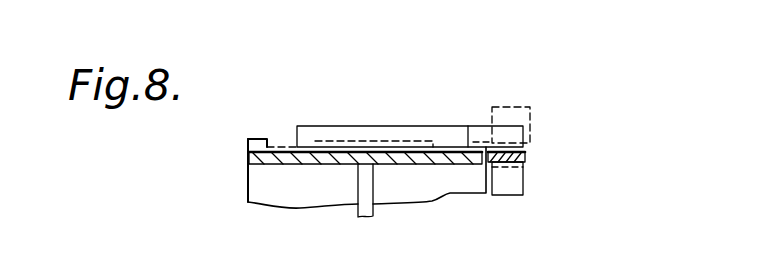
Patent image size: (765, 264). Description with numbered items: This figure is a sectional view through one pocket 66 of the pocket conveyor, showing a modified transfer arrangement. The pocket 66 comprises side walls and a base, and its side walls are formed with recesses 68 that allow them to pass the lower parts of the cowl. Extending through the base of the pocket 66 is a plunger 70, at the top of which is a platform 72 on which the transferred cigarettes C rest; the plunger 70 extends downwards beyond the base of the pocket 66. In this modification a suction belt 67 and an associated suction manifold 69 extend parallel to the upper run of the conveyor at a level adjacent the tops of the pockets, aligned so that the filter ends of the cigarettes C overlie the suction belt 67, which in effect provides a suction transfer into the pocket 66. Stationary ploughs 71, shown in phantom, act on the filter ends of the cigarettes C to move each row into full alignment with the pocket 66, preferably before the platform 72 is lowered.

The pocket 66 is at (242, 136).
The suction belt 67 is at (525, 157).
The recesses 68 is at (272, 141).
The suction manifold 69 is at (523, 183).
The plunger 70 is at (374, 192).
The stationary ploughs 71 is at (531, 107).
The platform 72 is at (333, 167).
The cigarettes C is at (405, 130).